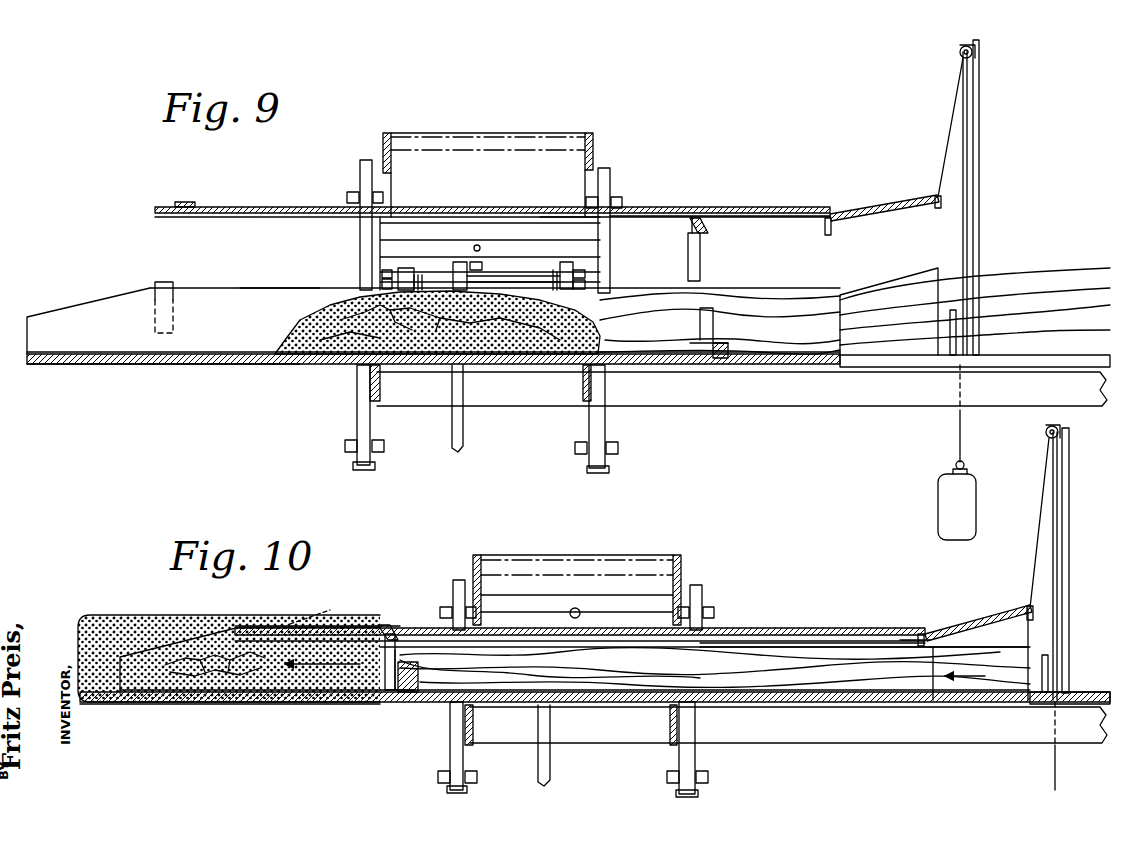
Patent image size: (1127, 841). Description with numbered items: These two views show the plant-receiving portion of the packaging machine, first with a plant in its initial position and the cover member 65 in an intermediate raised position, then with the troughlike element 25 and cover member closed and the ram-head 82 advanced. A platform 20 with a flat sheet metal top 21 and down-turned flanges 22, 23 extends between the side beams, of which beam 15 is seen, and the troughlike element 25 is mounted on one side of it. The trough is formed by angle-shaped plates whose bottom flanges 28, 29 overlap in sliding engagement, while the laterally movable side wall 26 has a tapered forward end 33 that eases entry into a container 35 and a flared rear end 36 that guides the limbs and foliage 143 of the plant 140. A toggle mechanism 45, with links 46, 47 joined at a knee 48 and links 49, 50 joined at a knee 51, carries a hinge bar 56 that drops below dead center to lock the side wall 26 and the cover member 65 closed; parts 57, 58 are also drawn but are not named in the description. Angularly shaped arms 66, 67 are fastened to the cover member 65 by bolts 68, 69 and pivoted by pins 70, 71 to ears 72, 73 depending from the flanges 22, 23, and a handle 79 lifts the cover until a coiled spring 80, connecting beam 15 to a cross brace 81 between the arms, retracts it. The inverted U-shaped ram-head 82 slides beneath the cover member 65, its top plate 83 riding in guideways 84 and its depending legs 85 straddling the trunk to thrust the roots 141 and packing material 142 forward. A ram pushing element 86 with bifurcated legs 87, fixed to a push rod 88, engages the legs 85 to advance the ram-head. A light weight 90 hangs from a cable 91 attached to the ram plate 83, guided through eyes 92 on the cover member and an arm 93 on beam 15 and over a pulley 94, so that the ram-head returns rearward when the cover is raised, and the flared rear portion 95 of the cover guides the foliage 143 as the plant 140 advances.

In FIG. 9, the side beam 15 is at (893, 407).
In FIG. 10, the side beam 15 is at (835, 744).
In FIG. 9, the platform 20 is at (529, 376).
In FIG. 10, the platform 20 is at (615, 712).
In FIG. 9, the flat sheet metal top 21 is at (492, 366).
In FIG. 10, the flat sheet metal top 21 is at (582, 705).
In FIG. 9, the front flange 22 is at (384, 388).
In FIG. 10, the front flange 22 is at (475, 722).
In FIG. 9, the side flange 23 is at (582, 388).
In FIG. 10, the side flange 23 is at (670, 722).
In FIG. 9, the troughlike element 25 is at (146, 282).
In FIG. 10, the troughlike element 25 is at (860, 665).
In FIG. 9, the side wall 26 is at (264, 312).
In FIG. 10, the side wall 26 is at (830, 652).
In FIG. 9, the bottom flange 28 is at (127, 352).
In FIG. 10, the bottom flange 28 is at (145, 702).
In FIG. 9, the bottom flange 29 is at (165, 364).
In FIG. 10, the bottom flange 29 is at (180, 704).
In FIG. 9, the tapered forward end 33 is at (86, 303).
In FIG. 10, the tapered forward end 33 is at (175, 645).
In FIG. 10, the container 35 is at (312, 612).
In FIG. 9, the flared rear end 36 is at (893, 285).
In FIG. 10, the flared rear end 36 is at (1005, 673).
In FIG. 9, the toggle mechanism 45 is at (397, 272).
In FIG. 9, the link 46 is at (408, 272).
In FIG. 9, the link 47 is at (385, 272).
In FIG. 9, the knee 48 is at (383, 283).
In FIG. 9, the link 49 is at (565, 270).
In FIG. 9, the link 50 is at (586, 272).
In FIG. 9, the knee 51 is at (586, 284).
In FIG. 9, the hinge bar 56 is at (518, 275).
In FIG. 9, the leg 57 is at (452, 446).
In FIG. 10, the leg 57 is at (538, 775).
In FIG. 9, the block 58 is at (455, 266).
In FIG. 9, the cover member 65 is at (655, 208).
In FIG. 10, the cover member 65 is at (745, 630).
In FIG. 9, the angularly shaped arm 66 is at (360, 170).
In FIG. 10, the angularly shaped arm 66 is at (453, 588).
In FIG. 9, the angularly shaped arm 67 is at (610, 176).
In FIG. 10, the angularly shaped arm 67 is at (702, 593).
In FIG. 9, the bolt 68 is at (347, 197).
In FIG. 10, the bolt 68 is at (440, 612).
In FIG. 9, the bolt 69 is at (622, 202).
In FIG. 10, the bolt 69 is at (714, 612).
In FIG. 9, the pin 70 is at (345, 445).
In FIG. 10, the pin 70 is at (438, 775).
In FIG. 9, the pin 71 is at (620, 446).
In FIG. 10, the pin 71 is at (708, 777).
In FIG. 9, the ear 72 is at (358, 405).
In FIG. 10, the ear 72 is at (452, 748).
In FIG. 9, the ear 73 is at (596, 412).
In FIG. 10, the ear 73 is at (686, 752).
In FIG. 9, the handle 79 is at (545, 133).
In FIG. 10, the handle 79 is at (615, 556).
In FIG. 9, the coiled spring 80 is at (478, 246).
In FIG. 10, the coiled spring 80 is at (578, 610).
In FIG. 9, the cross brace 81 is at (388, 245).
In FIG. 10, the cross brace 81 is at (548, 610).
In FIG. 9, the ram-head 82 is at (715, 226).
In FIG. 10, the ram-head 82 is at (375, 690).
In FIG. 9, the top plate 83 is at (752, 210).
In FIG. 10, the top plate 83 is at (518, 620).
In FIG. 9, the guideway 84 is at (575, 216).
In FIG. 10, the guideway 84 is at (268, 627).
In FIG. 9, the depending leg 85 is at (688, 255).
In FIG. 10, the depending leg 85 is at (386, 636).
In FIG. 9, the ram pushing element 86 is at (713, 318).
In FIG. 10, the ram pushing element 86 is at (398, 682).
In FIG. 9, the leg 87 is at (700, 334).
In FIG. 10, the leg 87 is at (410, 690).
In FIG. 9, the push rod 88 is at (1078, 365).
In FIG. 10, the push rod 88 is at (1080, 697).
In FIG. 9, the weight 90 is at (944, 515).
In FIG. 9, the cable 91 is at (948, 140).
In FIG. 10, the cable 91 is at (1048, 530).
In FIG. 9, the eye 92 is at (958, 52).
In FIG. 10, the eye 92 is at (1026, 608).
In FIG. 9, the arm 93 is at (980, 120).
In FIG. 10, the arm 93 is at (1070, 540).
In FIG. 9, the pulley 94 is at (960, 330).
In FIG. 10, the pulley 94 is at (1050, 662).
In FIG. 9, the flared rear portion 95 is at (875, 208).
In FIG. 10, the flared rear portion 95 is at (962, 627).
In FIG. 9, the plant 140 is at (640, 310).
In FIG. 10, the plant 140 is at (700, 680).
In FIG. 9, the roots 141 is at (330, 356).
In FIG. 10, the roots 141 is at (215, 665).
In FIG. 9, the packing material 142 is at (290, 340).
In FIG. 10, the packing material 142 is at (300, 690).
In FIG. 9, the limbs and foliage 143 is at (813, 300).
In FIG. 10, the limbs and foliage 143 is at (760, 665).